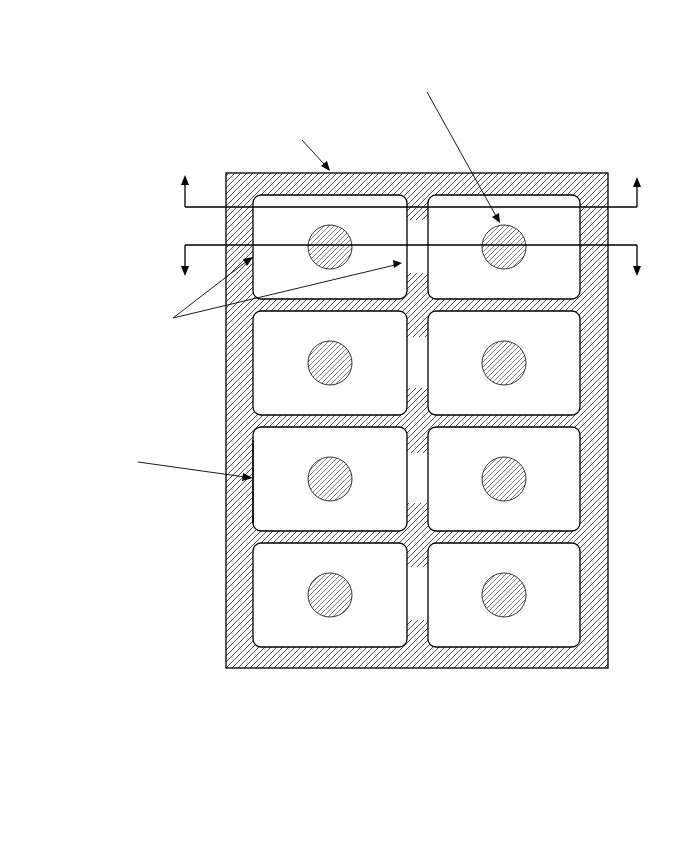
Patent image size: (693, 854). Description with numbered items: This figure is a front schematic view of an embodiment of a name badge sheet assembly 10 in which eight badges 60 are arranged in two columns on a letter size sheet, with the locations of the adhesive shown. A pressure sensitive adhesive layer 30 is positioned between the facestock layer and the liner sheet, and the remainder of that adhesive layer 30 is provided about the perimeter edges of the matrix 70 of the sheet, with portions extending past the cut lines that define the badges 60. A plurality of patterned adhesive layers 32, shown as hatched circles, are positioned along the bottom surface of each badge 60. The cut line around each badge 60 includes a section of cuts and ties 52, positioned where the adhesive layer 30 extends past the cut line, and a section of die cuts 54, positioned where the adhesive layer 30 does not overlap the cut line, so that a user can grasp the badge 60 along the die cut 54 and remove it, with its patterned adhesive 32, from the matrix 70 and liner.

The badge sheet assembly 10 is at (500, 142).
The adhesive layer 30 is at (240, 602).
The patterned adhesive layer 32 is at (322, 480).
The cuts and ties 52 is at (285, 530).
The die cut 54 is at (255, 471).
The badge 60 is at (262, 505).
The matrix 70 is at (587, 393).